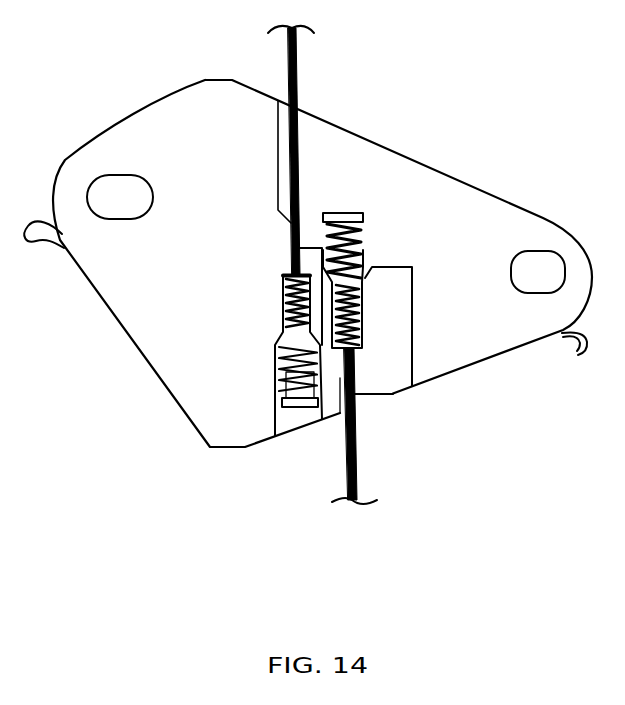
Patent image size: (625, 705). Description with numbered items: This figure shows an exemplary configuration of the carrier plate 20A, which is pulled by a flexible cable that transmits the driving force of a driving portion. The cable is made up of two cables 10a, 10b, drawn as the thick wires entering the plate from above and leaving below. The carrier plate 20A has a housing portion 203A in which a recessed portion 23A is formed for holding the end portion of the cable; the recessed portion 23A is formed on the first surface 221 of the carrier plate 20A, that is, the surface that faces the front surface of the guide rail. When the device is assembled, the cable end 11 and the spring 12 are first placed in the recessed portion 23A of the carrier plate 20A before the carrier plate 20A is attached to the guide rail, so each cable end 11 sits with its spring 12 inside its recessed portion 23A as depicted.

The cable 10a is at (298, 62).
The cable 10b is at (357, 476).
The cable end 11 is at (344, 212).
The spring 12 is at (366, 237).
The recessed portion 23A is at (373, 252).
The carrier plate 20A is at (492, 224).
The first surface 221 is at (447, 347).
The housing portion 203A is at (334, 380).